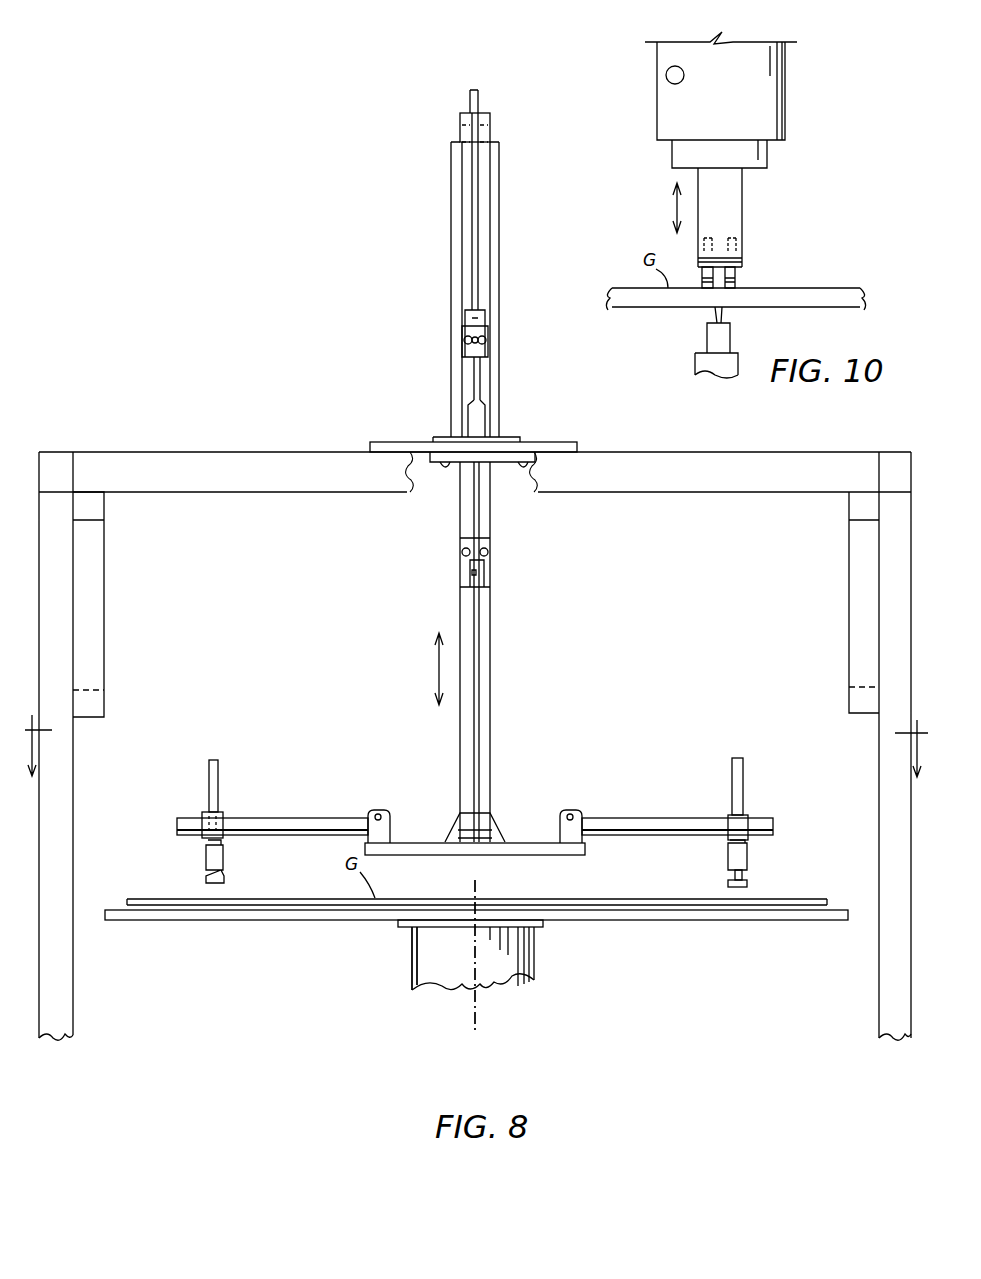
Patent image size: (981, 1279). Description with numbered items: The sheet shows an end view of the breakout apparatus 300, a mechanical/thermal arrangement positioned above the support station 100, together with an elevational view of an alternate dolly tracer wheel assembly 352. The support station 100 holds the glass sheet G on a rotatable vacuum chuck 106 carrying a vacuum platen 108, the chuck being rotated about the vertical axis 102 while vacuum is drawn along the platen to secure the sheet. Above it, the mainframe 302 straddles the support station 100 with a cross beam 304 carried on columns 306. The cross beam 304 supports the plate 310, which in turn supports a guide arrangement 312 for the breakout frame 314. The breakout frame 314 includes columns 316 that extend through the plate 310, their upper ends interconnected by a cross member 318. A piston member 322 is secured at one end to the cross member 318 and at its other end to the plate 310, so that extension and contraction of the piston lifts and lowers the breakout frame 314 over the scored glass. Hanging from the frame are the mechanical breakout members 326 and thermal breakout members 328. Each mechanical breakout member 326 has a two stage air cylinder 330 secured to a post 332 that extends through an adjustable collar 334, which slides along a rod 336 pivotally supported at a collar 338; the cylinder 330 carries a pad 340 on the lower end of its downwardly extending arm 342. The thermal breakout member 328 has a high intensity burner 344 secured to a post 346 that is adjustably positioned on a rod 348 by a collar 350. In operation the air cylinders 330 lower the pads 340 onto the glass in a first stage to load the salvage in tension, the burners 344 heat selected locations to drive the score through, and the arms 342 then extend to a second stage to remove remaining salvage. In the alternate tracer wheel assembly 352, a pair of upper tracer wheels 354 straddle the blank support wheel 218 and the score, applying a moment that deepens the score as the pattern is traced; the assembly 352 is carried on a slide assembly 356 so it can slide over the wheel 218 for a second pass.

In FIG. 8, the breakout apparatus 300 is at (372, 186).
In FIG. 8, the mainframe 302 is at (795, 452).
In FIG. 8, the cross beam 304 is at (222, 452).
In FIG. 8, the columns 306 is at (44, 900).
In FIG. 8, the plate 310 is at (539, 442).
In FIG. 8, the guide arrangement 312 is at (474, 379).
In FIG. 8, the breakout frame 314 is at (492, 128).
In FIG. 8, the columns 316 is at (490, 270).
In FIG. 8, the cross member 318 is at (470, 102).
In FIG. 8, the piston member 322 is at (499, 230).
In FIG. 8, the mechanical breakout member 326 is at (770, 798).
In FIG. 8, the thermal breakout member 328 is at (195, 796).
In FIG. 8, the two stage air cylinder 330 is at (728, 855).
In FIG. 8, the post 332 is at (732, 775).
In FIG. 8, the adjustable collar 334 is at (730, 818).
In FIG. 8, the rod 336 is at (613, 818).
In FIG. 8, the collar 338 is at (570, 813).
In FIG. 8, the pad 340 is at (728, 887).
In FIG. 8, the arm 342 is at (745, 883).
In FIG. 8, the high intensity burner 344 is at (223, 850).
In FIG. 8, the post 346 is at (215, 761).
In FIG. 8, the rod 348 is at (313, 818).
In FIG. 8, the collar 350 is at (226, 814).
In FIG. 8, the support station 100 is at (534, 946).
In FIG. 8, the vertical axis 102 is at (475, 1013).
In FIG. 8, the vacuum chuck 106 is at (412, 962).
In FIG. 8, the vacuum platen 108 is at (410, 931).
In FIG. 10, the dolly tracer wheel assembly 352 is at (657, 112).
In FIG. 10, the upper tracer wheels 354 is at (738, 279).
In FIG. 10, the slide assembly 356 is at (666, 74).
In FIG. 10, the support wheel 218 is at (722, 312).